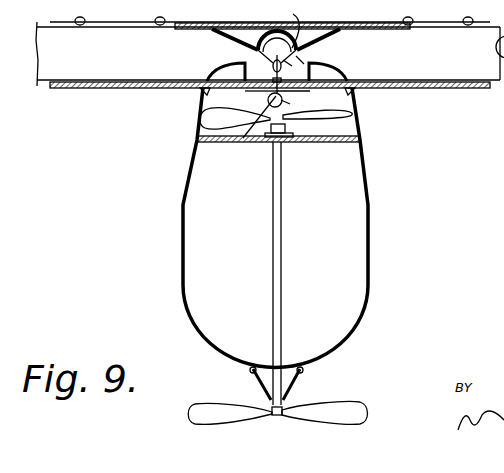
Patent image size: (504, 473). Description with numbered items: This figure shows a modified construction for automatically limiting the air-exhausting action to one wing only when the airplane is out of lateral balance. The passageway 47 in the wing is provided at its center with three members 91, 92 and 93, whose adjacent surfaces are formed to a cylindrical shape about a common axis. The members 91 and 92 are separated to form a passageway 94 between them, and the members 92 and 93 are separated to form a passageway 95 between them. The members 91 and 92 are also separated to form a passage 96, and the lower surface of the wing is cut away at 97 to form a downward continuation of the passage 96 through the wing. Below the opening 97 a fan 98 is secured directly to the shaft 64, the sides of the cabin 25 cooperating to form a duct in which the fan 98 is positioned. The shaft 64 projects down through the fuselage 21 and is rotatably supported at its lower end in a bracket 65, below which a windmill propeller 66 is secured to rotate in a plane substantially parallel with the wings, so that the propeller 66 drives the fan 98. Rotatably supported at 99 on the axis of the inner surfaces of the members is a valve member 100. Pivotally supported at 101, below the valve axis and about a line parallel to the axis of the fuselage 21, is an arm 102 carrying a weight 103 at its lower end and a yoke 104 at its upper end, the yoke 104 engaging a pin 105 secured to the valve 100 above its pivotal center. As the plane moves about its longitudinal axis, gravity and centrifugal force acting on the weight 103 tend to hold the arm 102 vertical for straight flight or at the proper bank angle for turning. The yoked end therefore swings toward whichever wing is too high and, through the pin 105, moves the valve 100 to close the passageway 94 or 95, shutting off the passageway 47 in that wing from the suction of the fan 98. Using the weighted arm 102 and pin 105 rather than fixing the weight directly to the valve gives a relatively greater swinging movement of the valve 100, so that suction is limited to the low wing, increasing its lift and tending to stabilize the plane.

The passageway 47 is at (270, 52).
The member 92 is at (228, 36).
The passageway 95 is at (302, 44).
The passageway 94 is at (258, 55).
The valve member 100 is at (278, 25).
The rotatable support 99 is at (265, 74).
The yoke 104 is at (295, 66).
The pin 105 is at (304, 62).
The member 91 is at (225, 63).
The member 93 is at (315, 68).
The opening 97 is at (268, 92).
The passage 96 is at (305, 92).
The pivot 101 is at (262, 115).
The arm 102 is at (297, 108).
The fuselage 21 is at (370, 290).
The cabin 25 is at (187, 153).
The fan 98 is at (357, 113).
The weight 103 is at (262, 136).
The shaft 64 is at (282, 297).
The bracket 65 is at (289, 386).
The windmill propeller 66 is at (350, 400).